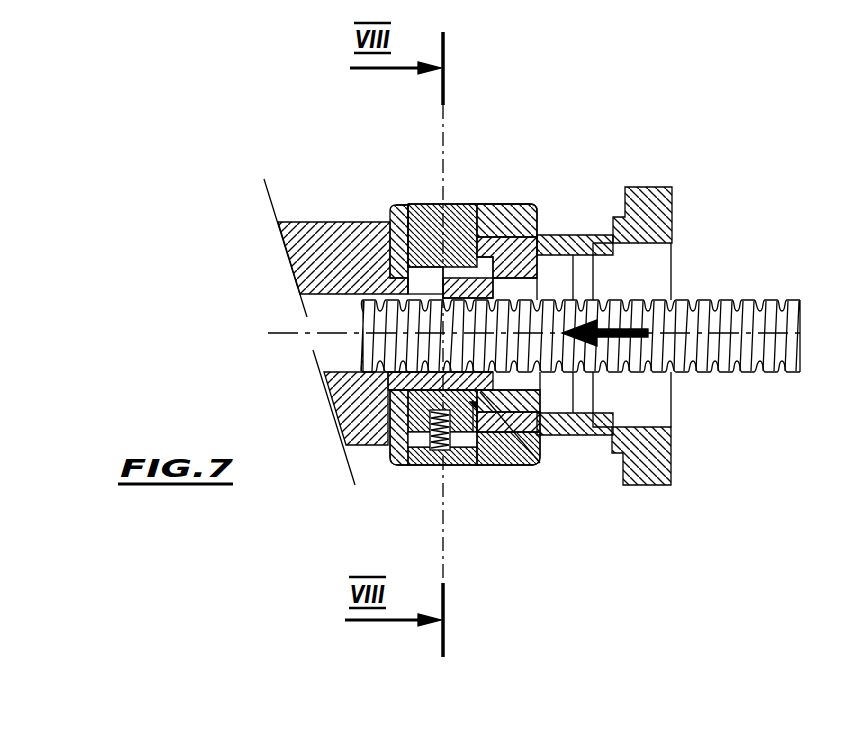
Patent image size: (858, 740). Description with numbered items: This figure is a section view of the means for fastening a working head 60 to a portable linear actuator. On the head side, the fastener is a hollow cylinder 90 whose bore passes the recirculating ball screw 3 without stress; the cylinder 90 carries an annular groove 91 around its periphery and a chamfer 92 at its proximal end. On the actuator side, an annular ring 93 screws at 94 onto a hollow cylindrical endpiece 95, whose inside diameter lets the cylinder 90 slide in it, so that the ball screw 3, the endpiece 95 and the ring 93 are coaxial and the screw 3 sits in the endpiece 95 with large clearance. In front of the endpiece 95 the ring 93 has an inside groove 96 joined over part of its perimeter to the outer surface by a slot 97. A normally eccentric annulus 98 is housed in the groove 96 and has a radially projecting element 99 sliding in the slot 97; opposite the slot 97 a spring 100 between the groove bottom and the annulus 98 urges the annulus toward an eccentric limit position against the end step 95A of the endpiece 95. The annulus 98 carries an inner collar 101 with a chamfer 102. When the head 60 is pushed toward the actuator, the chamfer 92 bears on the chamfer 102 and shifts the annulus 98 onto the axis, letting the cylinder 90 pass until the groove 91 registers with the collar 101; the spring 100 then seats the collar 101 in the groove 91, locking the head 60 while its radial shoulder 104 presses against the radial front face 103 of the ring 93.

The recirculating ball screw 3 is at (745, 300).
The working head 60 is at (290, 262).
The hollow cylinder 90 is at (417, 287).
The annular groove 91 is at (397, 206).
The chamfer 92 is at (513, 240).
The annular ring 93 is at (536, 205).
The screw connection 94 is at (588, 235).
The hollow cylindrical endpiece 95 is at (613, 215).
The end step 95A is at (500, 470).
The inside groove 96 is at (410, 465).
The slot 97 is at (500, 204).
The eccentric annulus 98 is at (400, 466).
The radially projecting element 99 is at (428, 290).
The spring 100 is at (440, 450).
The collar 101 is at (430, 426).
The chamfer 102 is at (392, 377).
The radial front face 103 is at (412, 389).
The radial shoulder 104 is at (400, 204).